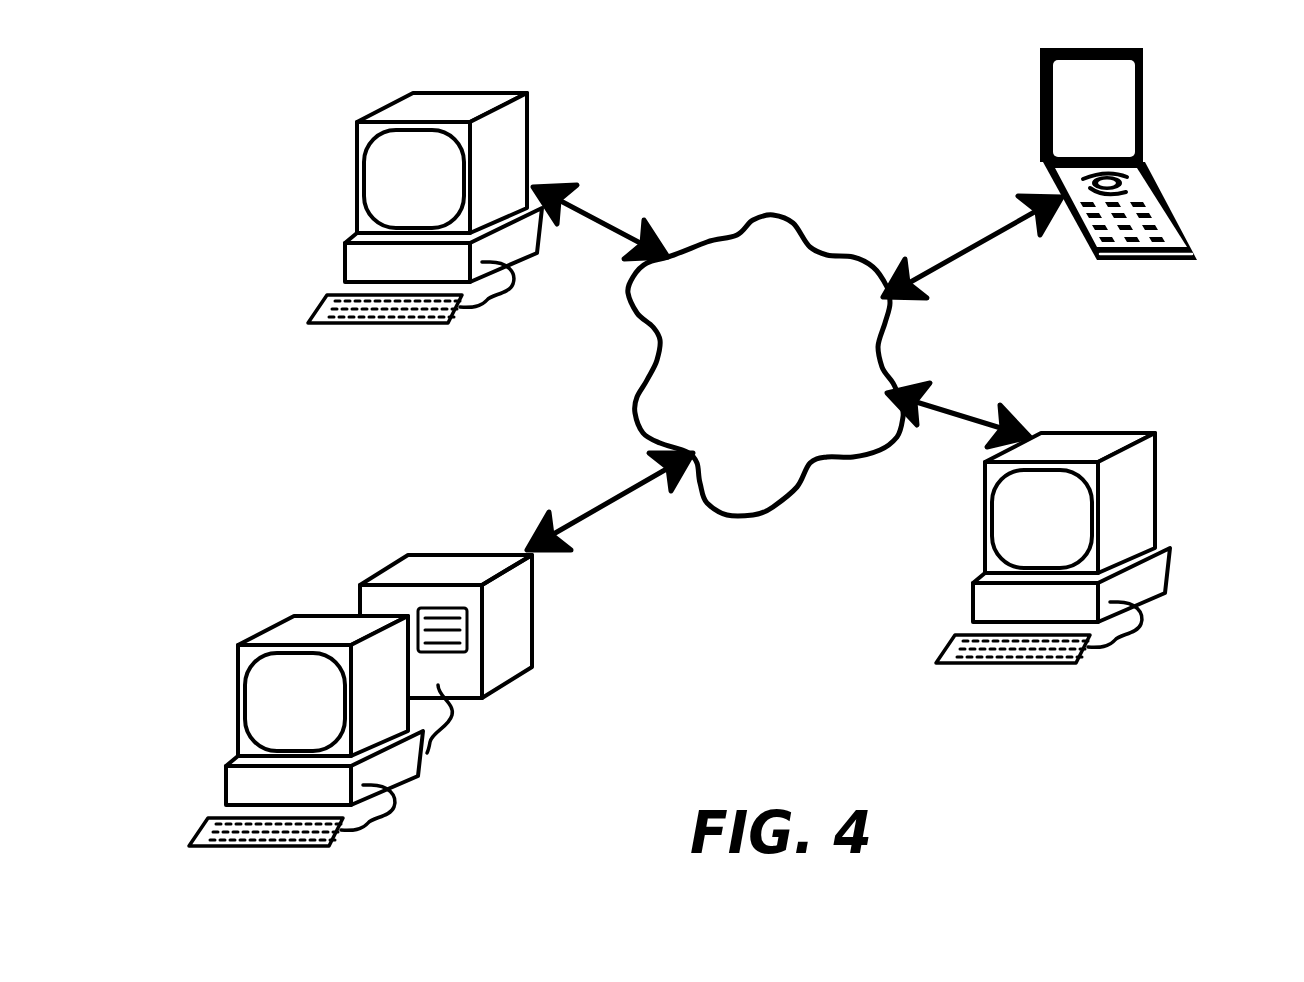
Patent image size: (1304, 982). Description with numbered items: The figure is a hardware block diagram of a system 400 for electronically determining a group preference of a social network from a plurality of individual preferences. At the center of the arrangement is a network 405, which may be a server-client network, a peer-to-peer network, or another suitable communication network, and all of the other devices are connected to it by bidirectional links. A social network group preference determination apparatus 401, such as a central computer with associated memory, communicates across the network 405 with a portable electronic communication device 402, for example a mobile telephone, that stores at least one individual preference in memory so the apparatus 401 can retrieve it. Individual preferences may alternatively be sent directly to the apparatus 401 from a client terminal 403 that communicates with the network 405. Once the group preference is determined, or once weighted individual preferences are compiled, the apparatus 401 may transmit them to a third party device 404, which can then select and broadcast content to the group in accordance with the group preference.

The system 400 is at (248, 472).
The social network group preference determination apparatus 401 is at (505, 633).
The portable electronic communication device 402 is at (1042, 93).
The client terminal 403 is at (500, 158).
The third party device 404 is at (1157, 575).
The network 405 is at (635, 318).